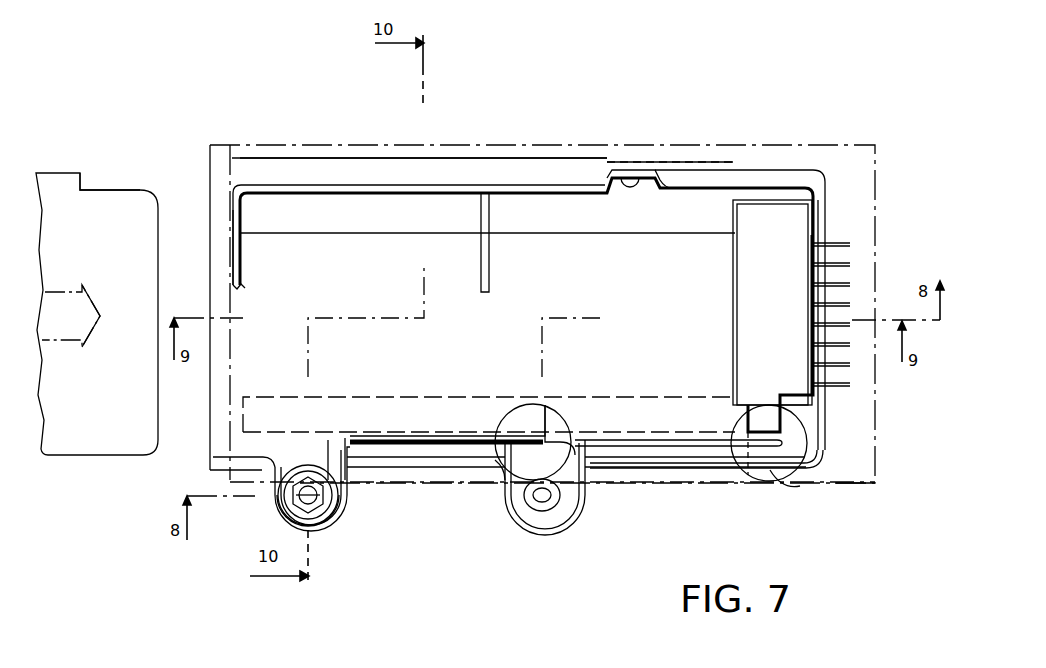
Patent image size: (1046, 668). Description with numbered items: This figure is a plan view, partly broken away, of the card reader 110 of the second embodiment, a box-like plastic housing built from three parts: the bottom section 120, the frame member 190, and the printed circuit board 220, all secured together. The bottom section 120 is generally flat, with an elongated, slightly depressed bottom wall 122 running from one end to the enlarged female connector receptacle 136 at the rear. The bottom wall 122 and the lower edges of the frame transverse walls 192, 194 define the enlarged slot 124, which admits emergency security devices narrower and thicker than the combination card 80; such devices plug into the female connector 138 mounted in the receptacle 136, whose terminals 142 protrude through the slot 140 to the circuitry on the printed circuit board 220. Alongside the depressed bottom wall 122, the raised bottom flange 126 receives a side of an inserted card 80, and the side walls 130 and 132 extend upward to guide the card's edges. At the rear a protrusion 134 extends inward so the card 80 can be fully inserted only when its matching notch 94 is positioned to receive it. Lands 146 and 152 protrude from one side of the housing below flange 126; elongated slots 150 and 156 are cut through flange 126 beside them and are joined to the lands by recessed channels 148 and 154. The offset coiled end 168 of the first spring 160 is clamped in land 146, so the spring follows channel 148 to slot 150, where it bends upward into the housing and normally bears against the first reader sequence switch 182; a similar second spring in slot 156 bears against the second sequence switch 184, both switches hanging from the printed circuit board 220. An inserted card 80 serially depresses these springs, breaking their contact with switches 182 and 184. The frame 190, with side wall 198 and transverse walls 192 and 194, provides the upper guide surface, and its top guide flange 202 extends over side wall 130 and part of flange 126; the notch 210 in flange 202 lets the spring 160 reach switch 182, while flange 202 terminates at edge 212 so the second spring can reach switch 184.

The combination card 80 is at (100, 460).
The matching notch 94 is at (88, 190).
The card reader 110 is at (493, 108).
The bottom section 120 is at (828, 192).
The bottom wall 122 is at (457, 322).
The enlarged slot 124 is at (233, 360).
The raised bottom flange 126 is at (489, 414).
The side wall 130 is at (460, 470).
The side wall 132 is at (632, 178).
The protrusion 134 is at (690, 195).
The female connector receptacle 136 is at (803, 432).
The female connector 138 is at (772, 302).
The slot 140 is at (818, 240).
The terminals 142 is at (845, 265).
The land 146 is at (330, 525).
The recessed channel 148 is at (327, 455).
The elongated slot 150 is at (462, 440).
The land 152 is at (560, 515).
The recessed channel 154 is at (545, 450).
The elongated slot 156 is at (618, 445).
The first spring 160 is at (355, 465).
The offset coiled end 168 is at (278, 500).
The first reader sequence switch 182 is at (565, 412).
The second reader sequence switch 184 is at (790, 483).
The frame member 190 is at (400, 163).
The transverse wall 192 is at (240, 262).
The transverse wall 194 is at (489, 262).
The side wall 198 is at (262, 205).
The top guide flange 202 is at (395, 430).
The notch 210 is at (500, 470).
The edge 212 is at (752, 478).
The printed circuit board 220 is at (855, 493).